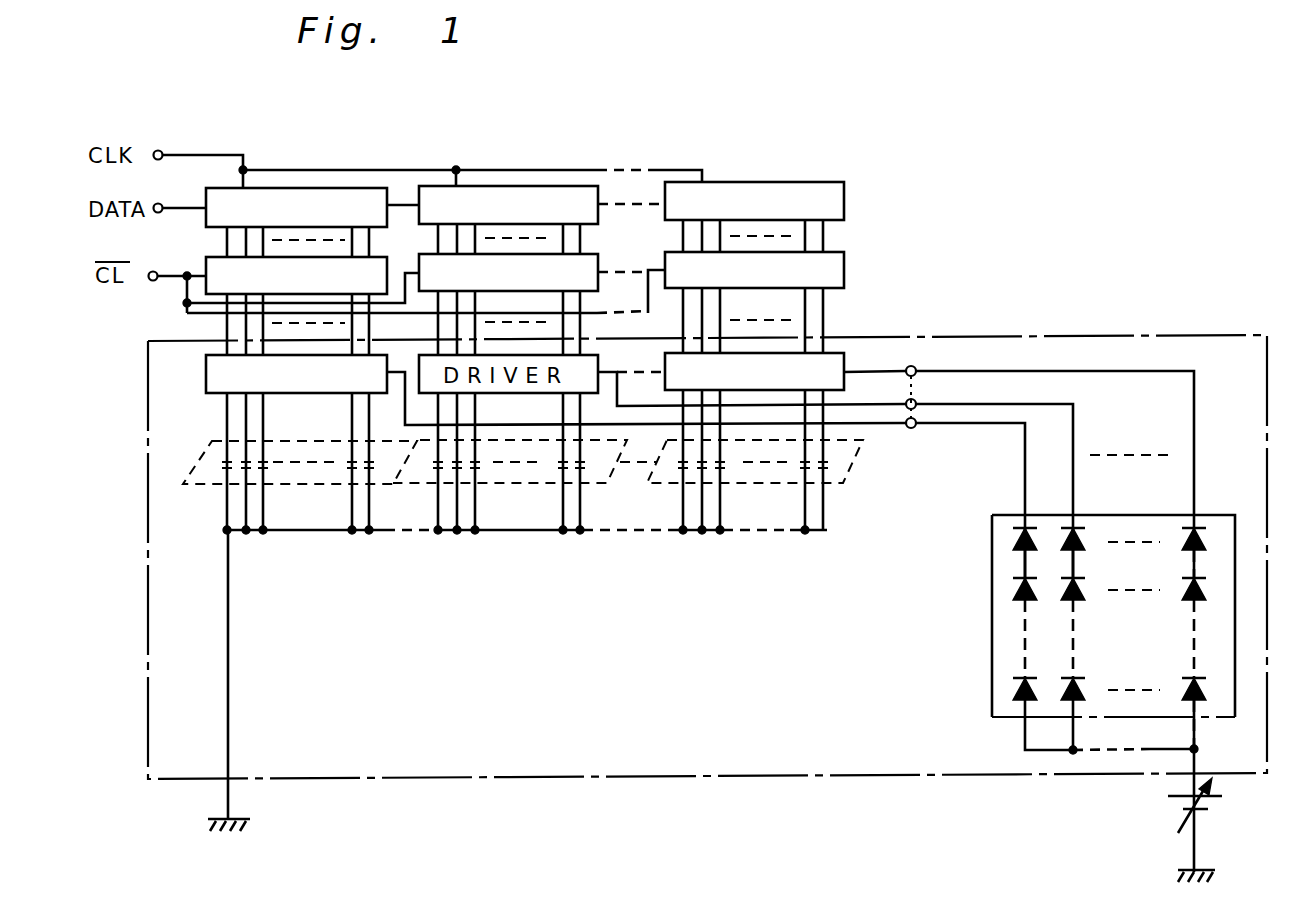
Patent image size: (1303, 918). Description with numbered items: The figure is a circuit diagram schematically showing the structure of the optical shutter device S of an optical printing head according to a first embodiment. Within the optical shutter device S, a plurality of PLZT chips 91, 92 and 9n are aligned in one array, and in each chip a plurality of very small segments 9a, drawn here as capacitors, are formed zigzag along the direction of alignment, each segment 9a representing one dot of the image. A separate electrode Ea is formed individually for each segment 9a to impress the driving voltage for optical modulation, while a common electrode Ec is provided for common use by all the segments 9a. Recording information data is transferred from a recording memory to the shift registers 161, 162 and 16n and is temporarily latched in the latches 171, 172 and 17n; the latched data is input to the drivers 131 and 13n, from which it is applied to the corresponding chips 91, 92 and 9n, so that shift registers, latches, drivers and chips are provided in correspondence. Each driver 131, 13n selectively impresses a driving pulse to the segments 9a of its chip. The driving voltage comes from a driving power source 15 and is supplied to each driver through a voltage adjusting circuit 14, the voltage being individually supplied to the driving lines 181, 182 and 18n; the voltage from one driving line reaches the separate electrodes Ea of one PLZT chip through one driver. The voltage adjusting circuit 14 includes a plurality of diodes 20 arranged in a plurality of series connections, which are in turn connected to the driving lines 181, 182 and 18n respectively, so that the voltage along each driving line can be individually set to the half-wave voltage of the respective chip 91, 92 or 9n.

The shift register 161 is at (290, 187).
The shift register 162 is at (540, 186).
The shift register 16n is at (790, 182).
The latch 171 is at (206, 258).
The latch 172 is at (422, 253).
The latch 17n is at (840, 252).
The driver 131 is at (206, 365).
The driver 13n is at (837, 353).
The driving line 181 is at (880, 427).
The driving line 182 is at (890, 408).
The driving line 18n is at (912, 366).
The voltage adjusting circuit 14 is at (992, 570).
The diode 20 is at (1012, 688).
The driving power source 15 is at (1168, 800).
The segment 9a is at (222, 458).
The PLZT chip 91 is at (197, 490).
The PLZT chip 92 is at (415, 490).
The PLZT chip 9n is at (668, 480).
The separate electrode Ea is at (227, 432).
The common electrode Ec is at (303, 532).
The optical shutter device S is at (147, 607).